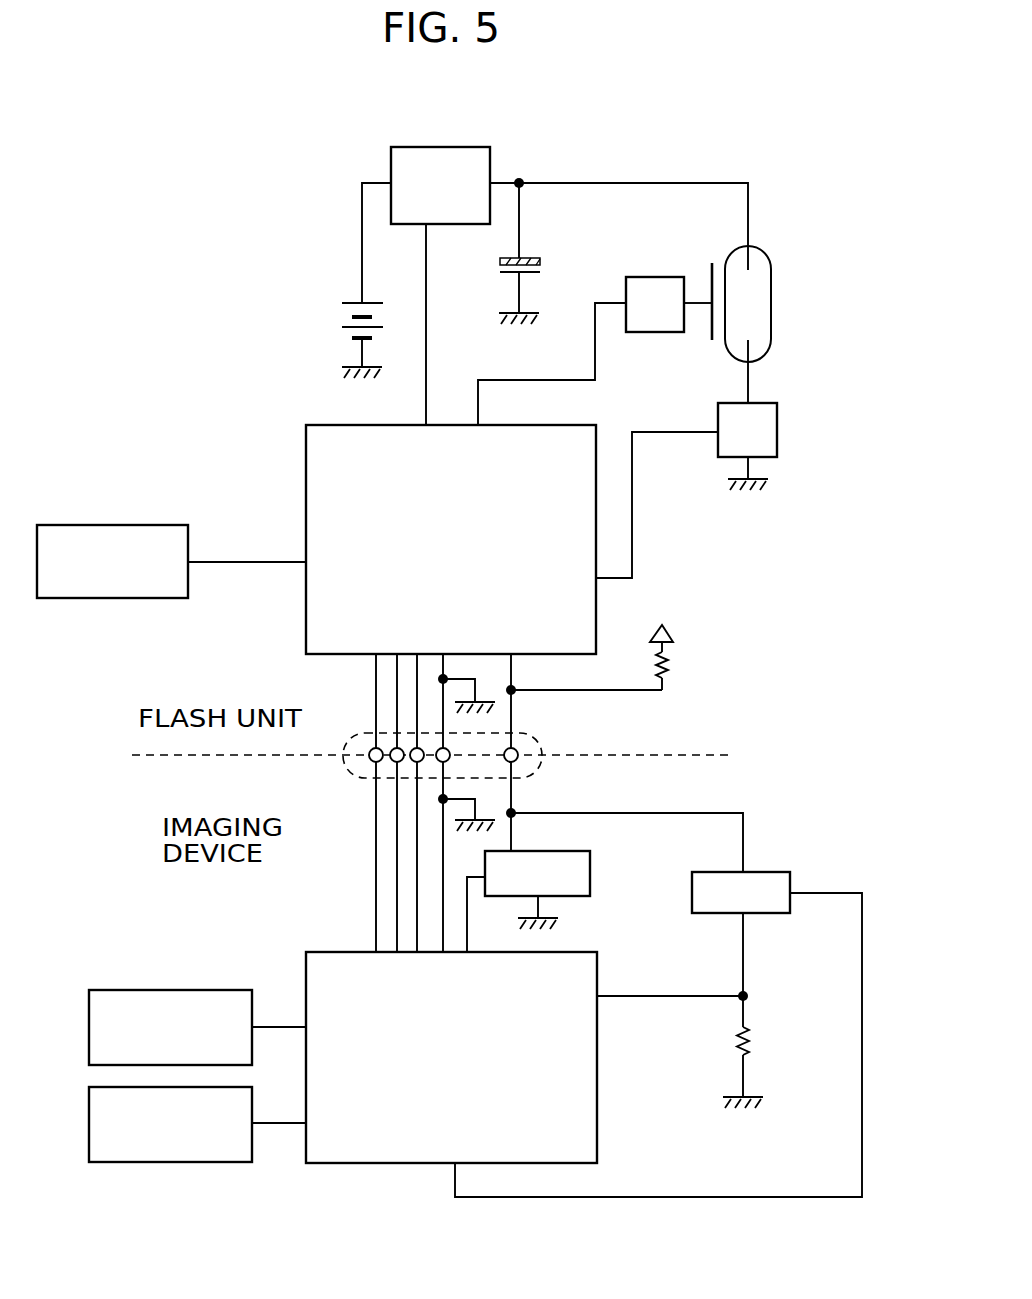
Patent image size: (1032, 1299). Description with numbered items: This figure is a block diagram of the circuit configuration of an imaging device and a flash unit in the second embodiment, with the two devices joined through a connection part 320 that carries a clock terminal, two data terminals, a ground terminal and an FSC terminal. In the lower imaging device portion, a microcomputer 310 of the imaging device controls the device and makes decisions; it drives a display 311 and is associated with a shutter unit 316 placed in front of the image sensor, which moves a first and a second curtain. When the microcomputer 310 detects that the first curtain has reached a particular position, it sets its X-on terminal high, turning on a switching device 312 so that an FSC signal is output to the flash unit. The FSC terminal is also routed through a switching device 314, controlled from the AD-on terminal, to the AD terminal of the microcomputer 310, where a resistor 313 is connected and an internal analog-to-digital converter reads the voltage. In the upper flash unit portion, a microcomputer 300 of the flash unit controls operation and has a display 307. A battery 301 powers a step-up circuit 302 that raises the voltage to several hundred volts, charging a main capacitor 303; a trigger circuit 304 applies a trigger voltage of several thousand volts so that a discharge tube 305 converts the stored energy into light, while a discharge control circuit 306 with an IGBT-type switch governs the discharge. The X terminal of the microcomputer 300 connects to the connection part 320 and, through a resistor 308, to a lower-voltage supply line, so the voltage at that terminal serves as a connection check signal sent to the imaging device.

The microcomputer of the flash unit 300 is at (305, 490).
The battery 301 is at (341, 321).
The step-up circuit 302 is at (447, 147).
The main capacitor 303 is at (532, 256).
The trigger circuit 304 is at (657, 277).
The discharge tube 305 is at (772, 305).
The discharge control circuit 306 is at (778, 431).
The display 307 is at (105, 525).
The resistor 308 is at (669, 668).
The microcomputer of the imaging device 310 is at (594, 1120).
The display 311 is at (170, 990).
The switching device 312 is at (592, 880).
The resistor 313 is at (751, 1046).
The switching device 314 is at (760, 914).
The shutter unit 316 is at (172, 1162).
The connection part 320 is at (540, 767).